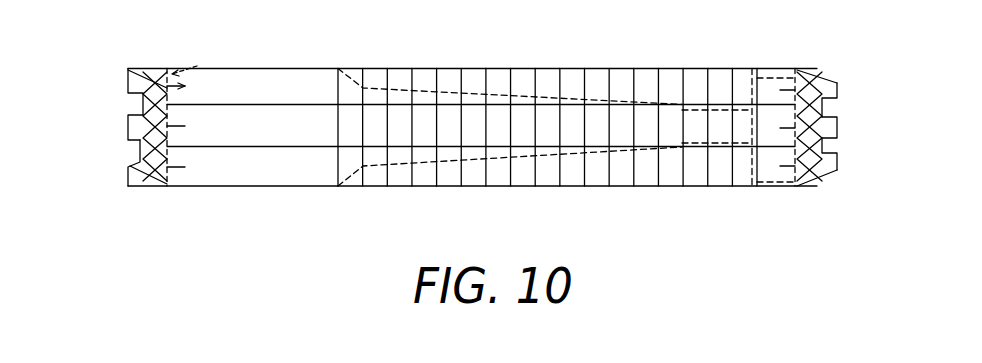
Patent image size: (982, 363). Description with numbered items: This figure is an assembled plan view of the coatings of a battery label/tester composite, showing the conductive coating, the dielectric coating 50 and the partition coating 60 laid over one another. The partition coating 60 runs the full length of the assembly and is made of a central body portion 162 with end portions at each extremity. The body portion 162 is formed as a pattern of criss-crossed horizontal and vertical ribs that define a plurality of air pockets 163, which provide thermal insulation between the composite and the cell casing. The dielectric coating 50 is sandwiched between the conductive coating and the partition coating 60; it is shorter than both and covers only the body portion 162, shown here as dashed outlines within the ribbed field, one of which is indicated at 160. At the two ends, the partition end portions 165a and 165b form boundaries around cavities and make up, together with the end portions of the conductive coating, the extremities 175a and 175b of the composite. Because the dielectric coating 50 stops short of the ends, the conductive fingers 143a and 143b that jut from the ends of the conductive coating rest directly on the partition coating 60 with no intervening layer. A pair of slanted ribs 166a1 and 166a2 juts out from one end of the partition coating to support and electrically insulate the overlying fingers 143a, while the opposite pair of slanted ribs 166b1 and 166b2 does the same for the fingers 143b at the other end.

The dielectric coating 50 is at (142, 123).
The partition coating 60 is at (597, 68).
The lower conductor 160 is at (463, 178).
The body portion 162 is at (488, 68).
The air pockets 163 is at (593, 176).
The partition end portion 165a is at (140, 82).
The partition end portion 165b is at (826, 114).
The conductive fingers 143a is at (128, 120).
The conductive fingers 143b is at (838, 126).
The extremity 175a is at (140, 150).
The extremity 175b is at (823, 155).
The slanted rib 166a1 is at (128, 70).
The slanted rib 166a2 is at (111, 192).
The slanted rib 166b1 is at (838, 80).
The slanted rib 166b2 is at (838, 184).